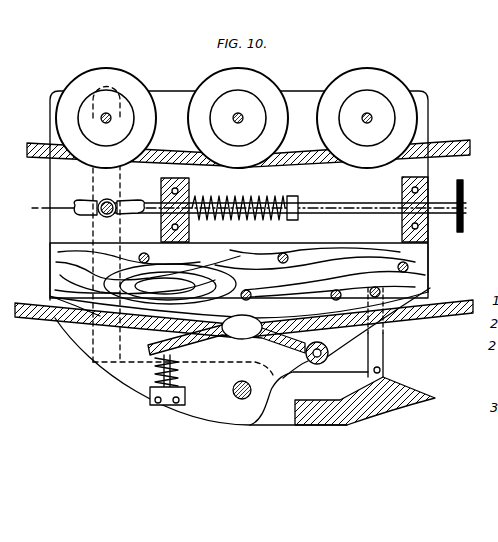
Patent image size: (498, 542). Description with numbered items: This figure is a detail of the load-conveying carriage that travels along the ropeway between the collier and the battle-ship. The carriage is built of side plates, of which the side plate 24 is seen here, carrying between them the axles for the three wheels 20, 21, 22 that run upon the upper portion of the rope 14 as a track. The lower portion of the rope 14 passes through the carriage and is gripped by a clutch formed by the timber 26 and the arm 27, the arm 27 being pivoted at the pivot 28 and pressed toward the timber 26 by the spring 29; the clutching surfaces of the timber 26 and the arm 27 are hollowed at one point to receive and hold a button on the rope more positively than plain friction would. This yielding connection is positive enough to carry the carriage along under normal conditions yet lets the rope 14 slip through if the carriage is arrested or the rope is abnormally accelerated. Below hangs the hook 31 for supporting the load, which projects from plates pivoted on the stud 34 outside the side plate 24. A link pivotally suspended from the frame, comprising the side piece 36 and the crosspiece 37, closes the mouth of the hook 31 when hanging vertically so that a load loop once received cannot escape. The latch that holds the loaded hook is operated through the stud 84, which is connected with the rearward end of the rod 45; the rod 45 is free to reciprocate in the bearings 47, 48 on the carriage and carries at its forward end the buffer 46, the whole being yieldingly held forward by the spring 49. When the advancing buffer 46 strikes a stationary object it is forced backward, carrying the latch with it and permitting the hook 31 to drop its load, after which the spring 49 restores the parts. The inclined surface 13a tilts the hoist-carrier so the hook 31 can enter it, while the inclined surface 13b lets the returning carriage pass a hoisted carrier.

The inclined surface 13a is at (412, 396).
The inclined surface 13b is at (120, 382).
The rope 14 is at (446, 147).
The wheel 20 is at (106, 118).
The wheel 21 is at (238, 118).
The wheel 22 is at (367, 118).
The side plate 24 is at (239, 203).
The timber 26 is at (239, 280).
The arm 27 is at (269, 344).
The pivot 28 is at (330, 350).
The spring 29 is at (180, 376).
The hook 31 is at (360, 424).
The stud 34 is at (240, 400).
The side piece 36 is at (384, 360).
The crosspiece 37 is at (381, 371).
The rod 45 is at (362, 203).
The buffer 46 is at (478, 193).
The bearing 47 is at (190, 229).
The bearing 48 is at (401, 226).
The spring 49 is at (266, 196).
The stud 84 is at (116, 202).